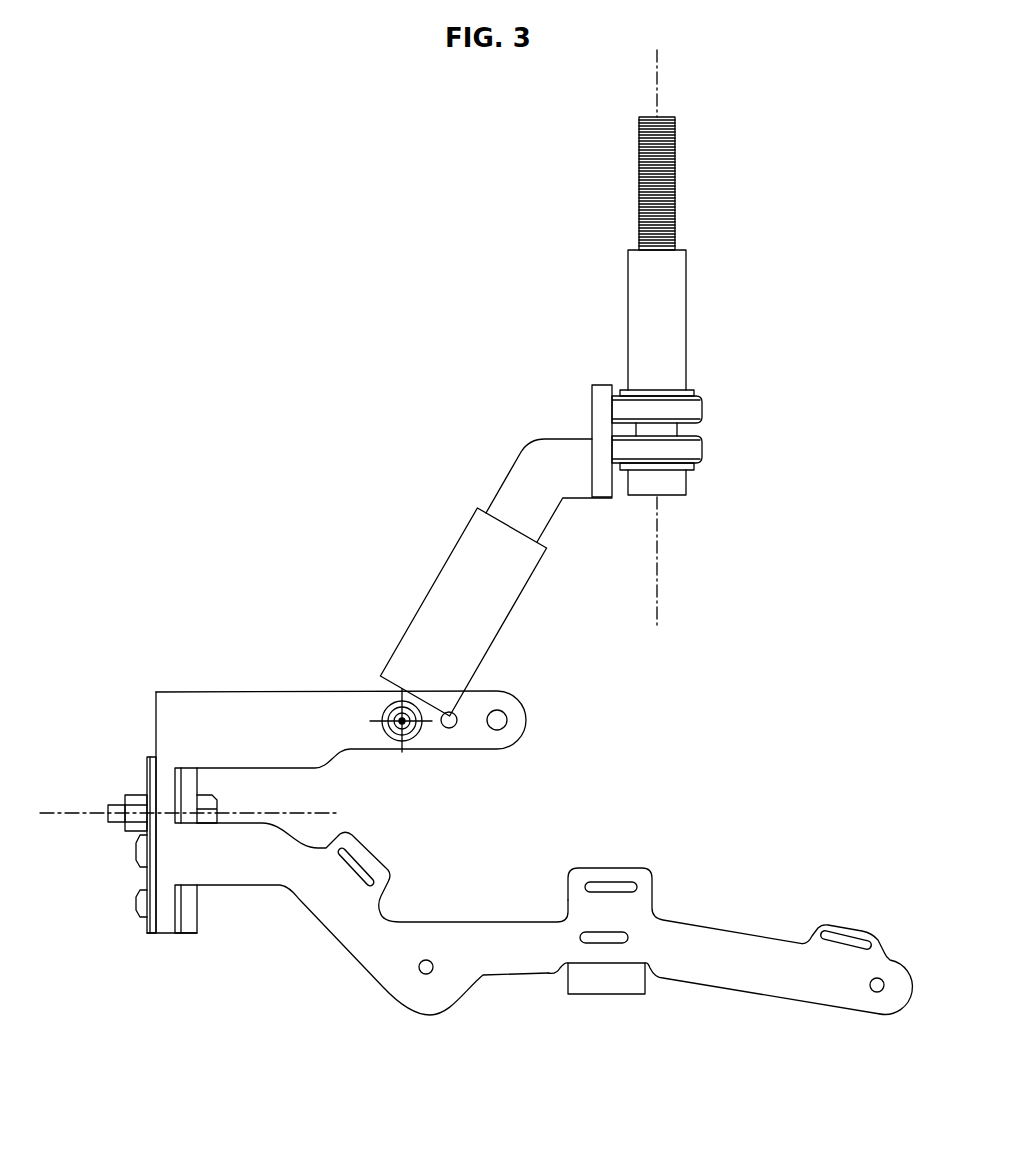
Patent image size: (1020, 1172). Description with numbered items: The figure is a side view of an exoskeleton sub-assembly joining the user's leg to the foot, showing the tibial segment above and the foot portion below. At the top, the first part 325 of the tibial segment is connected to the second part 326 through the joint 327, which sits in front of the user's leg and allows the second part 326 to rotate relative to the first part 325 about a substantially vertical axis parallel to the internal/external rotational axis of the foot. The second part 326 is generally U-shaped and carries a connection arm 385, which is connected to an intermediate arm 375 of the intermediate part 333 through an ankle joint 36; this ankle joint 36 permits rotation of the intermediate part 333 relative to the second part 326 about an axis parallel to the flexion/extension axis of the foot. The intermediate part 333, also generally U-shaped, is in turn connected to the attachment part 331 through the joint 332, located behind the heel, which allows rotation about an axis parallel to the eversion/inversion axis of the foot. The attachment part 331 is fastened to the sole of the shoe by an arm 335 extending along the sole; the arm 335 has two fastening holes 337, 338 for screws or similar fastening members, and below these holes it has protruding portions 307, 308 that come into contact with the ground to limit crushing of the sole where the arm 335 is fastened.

The first part of the tibial segment 325 is at (692, 323).
The joint 327 is at (711, 429).
The second part of the tibial segment 326 is at (508, 466).
The connection arm 385 is at (426, 587).
The ankle joint 36 is at (391, 713).
The intermediate arm 375 is at (300, 708).
The intermediate part 333 is at (186, 689).
The joint 332 is at (104, 809).
The attachment part 331 is at (327, 933).
The arm 335 is at (513, 966).
The fastening hole 337 is at (432, 961).
The fastening hole 338 is at (875, 991).
The protruding portion 308 is at (890, 1018).
The protruding portion 307 is at (554, 956).